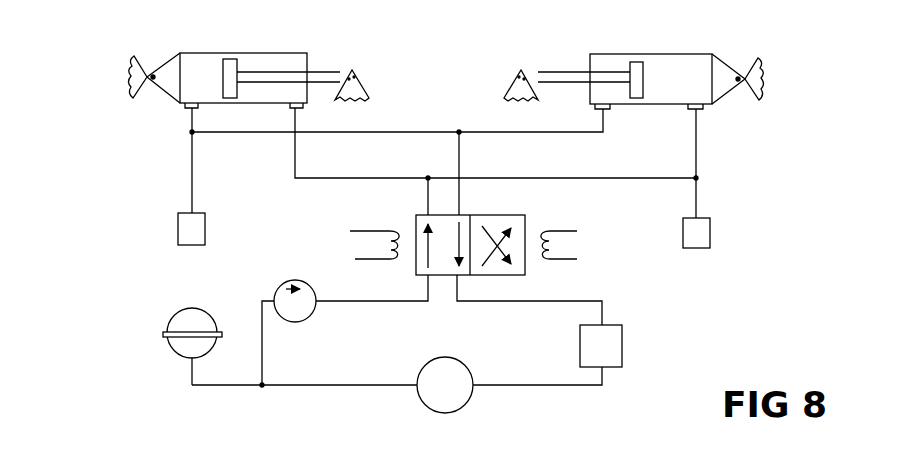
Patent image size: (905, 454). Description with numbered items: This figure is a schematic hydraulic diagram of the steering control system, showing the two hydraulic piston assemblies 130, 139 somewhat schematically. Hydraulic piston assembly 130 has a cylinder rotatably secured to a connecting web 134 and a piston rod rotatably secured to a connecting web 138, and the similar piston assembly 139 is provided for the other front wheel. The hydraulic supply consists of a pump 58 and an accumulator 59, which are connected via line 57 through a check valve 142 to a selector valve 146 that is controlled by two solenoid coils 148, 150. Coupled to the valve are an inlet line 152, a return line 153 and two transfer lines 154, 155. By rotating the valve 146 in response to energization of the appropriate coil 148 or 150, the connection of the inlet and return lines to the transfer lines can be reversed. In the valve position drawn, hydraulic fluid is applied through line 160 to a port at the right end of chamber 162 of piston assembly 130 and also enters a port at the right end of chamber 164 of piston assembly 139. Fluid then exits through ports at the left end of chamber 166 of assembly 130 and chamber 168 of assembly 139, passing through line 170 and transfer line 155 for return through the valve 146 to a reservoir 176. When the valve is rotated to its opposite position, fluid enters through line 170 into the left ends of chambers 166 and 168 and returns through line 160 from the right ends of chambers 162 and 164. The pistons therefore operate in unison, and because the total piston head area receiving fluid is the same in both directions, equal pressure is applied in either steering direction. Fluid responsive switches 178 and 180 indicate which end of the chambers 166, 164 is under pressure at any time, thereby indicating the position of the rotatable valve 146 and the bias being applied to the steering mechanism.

The hydraulic piston assembly 139 is at (146, 45).
The chamber 168 is at (203, 60).
The chamber 164 is at (274, 60).
The connecting web 134 is at (139, 94).
The connecting web 138 is at (362, 94).
The hydraulic piston assembly 130 is at (734, 51).
The chamber 162 is at (681, 60).
The chamber 166 is at (608, 60).
The line 170 is at (400, 131).
The line 160 is at (342, 178).
The fluid responsive switch 178 is at (178, 236).
The fluid responsive switch 180 is at (710, 237).
The transfer line 154 is at (428, 200).
The transfer line 155 is at (459, 200).
The selector valve 146 is at (526, 210).
The solenoid coil 148 is at (368, 260).
The solenoid coil 150 is at (556, 262).
The inlet line 152 is at (428, 289).
The return line 153 is at (460, 289).
The reservoir 176 is at (622, 354).
The pump 58 is at (455, 358).
The line 57 is at (380, 386).
The check valve 142 is at (311, 314).
The accumulator 59 is at (173, 351).